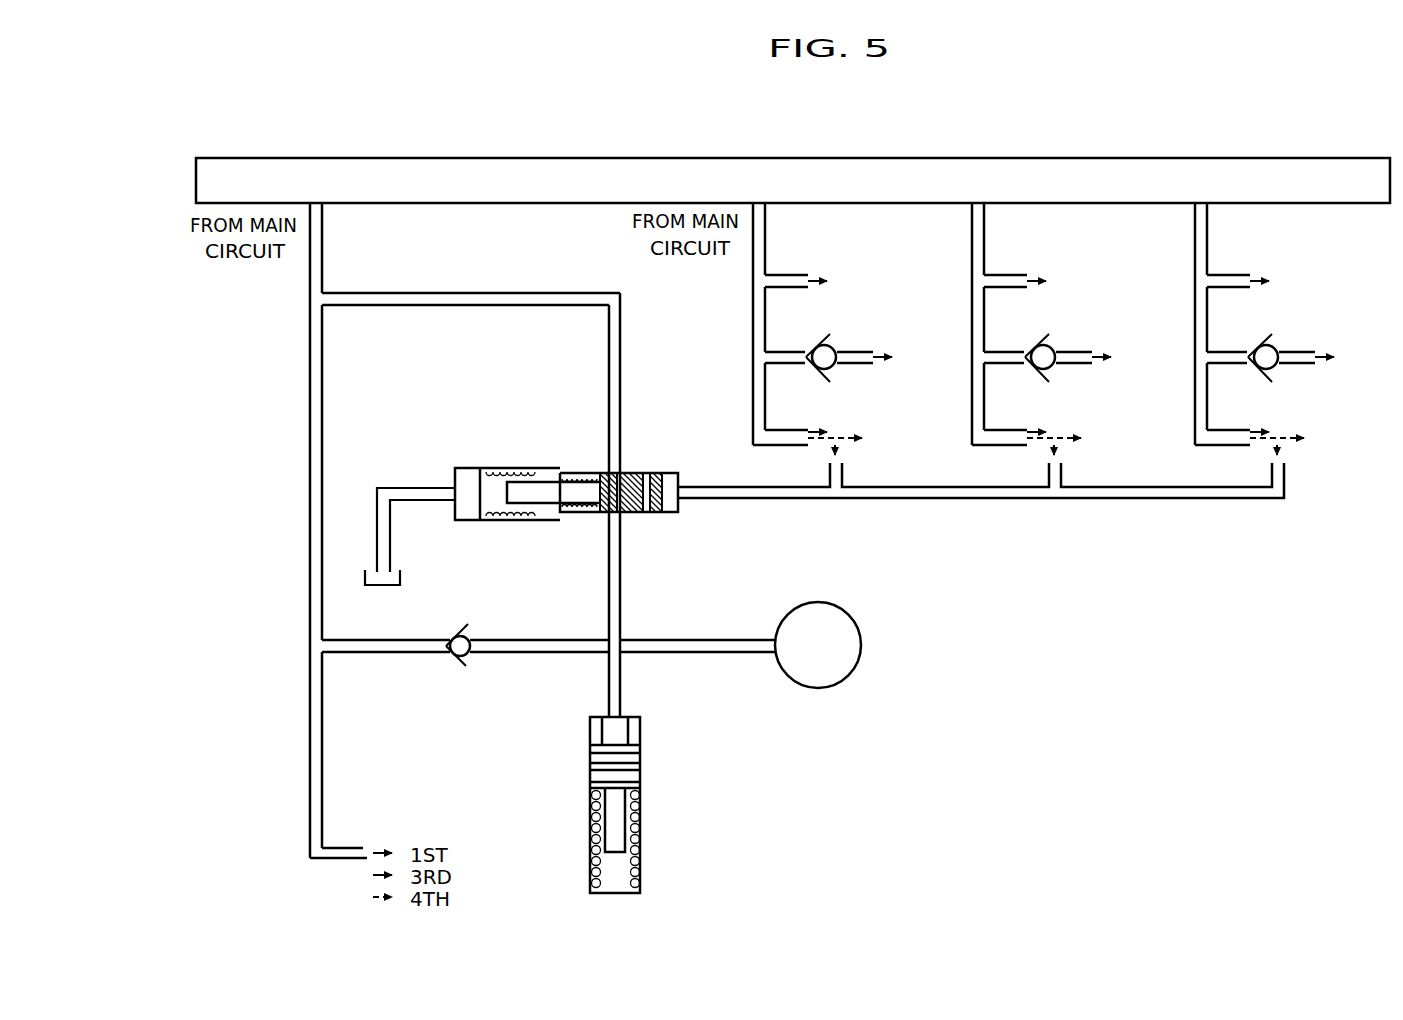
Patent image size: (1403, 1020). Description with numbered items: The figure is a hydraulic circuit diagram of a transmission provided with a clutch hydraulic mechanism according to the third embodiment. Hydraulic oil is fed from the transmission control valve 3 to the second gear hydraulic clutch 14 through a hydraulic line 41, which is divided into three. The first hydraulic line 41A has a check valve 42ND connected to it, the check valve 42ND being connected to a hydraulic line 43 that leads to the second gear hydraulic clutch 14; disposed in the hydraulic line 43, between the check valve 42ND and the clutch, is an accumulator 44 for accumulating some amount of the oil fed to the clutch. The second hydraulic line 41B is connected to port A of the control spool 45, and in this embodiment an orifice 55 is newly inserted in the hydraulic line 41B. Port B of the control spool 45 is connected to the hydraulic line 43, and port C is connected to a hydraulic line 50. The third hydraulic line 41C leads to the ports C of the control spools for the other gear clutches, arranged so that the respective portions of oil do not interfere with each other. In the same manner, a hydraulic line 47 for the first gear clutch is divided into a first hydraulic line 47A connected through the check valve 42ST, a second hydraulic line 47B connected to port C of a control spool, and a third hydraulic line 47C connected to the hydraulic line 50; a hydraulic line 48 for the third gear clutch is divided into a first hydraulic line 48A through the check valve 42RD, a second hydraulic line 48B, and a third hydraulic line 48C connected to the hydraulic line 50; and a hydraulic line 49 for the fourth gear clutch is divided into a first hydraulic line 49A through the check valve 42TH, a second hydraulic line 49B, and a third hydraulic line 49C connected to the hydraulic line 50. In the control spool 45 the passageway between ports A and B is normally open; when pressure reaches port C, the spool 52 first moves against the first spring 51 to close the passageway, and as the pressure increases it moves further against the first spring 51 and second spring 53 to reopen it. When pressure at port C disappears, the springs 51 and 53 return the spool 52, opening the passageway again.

The transmission control valve 3 is at (1290, 158).
The second gear hydraulic clutch 14 is at (861, 645).
The hydraulic line 41 is at (310, 370).
The first hydraulic line 41A is at (376, 652).
The second hydraulic line 41B is at (463, 293).
The third hydraulic line 41C is at (345, 848).
The check valve 42ND is at (458, 660).
The check valve 42ST is at (826, 362).
The check valve 42RD is at (1045, 362).
The check valve 42TH is at (1268, 362).
The hydraulic line 43 is at (514, 638).
The accumulator 44 is at (590, 783).
The control spool 45 is at (533, 488).
The hydraulic line 47 is at (753, 312).
The first hydraulic line 47A is at (780, 350).
The second hydraulic line 47B is at (781, 272).
The third hydraulic line 47C is at (779, 428).
The hydraulic line 48 is at (972, 248).
The first hydraulic line 48A is at (999, 350).
The second hydraulic line 48B is at (1000, 272).
The third hydraulic line 48C is at (998, 428).
The hydraulic line 49 is at (1195, 242).
The first hydraulic line 49A is at (1222, 350).
The second hydraulic line 49B is at (1223, 272).
The third hydraulic line 49C is at (1221, 428).
The hydraulic line 50 is at (970, 498).
The first spring 51 is at (576, 473).
The spool 52 is at (628, 513).
The second spring 53 is at (498, 468).
The orifice 55 is at (620, 367).